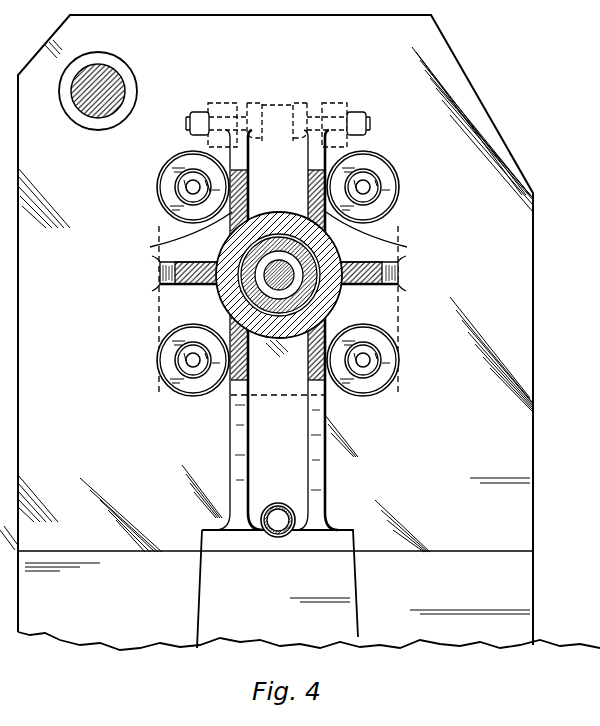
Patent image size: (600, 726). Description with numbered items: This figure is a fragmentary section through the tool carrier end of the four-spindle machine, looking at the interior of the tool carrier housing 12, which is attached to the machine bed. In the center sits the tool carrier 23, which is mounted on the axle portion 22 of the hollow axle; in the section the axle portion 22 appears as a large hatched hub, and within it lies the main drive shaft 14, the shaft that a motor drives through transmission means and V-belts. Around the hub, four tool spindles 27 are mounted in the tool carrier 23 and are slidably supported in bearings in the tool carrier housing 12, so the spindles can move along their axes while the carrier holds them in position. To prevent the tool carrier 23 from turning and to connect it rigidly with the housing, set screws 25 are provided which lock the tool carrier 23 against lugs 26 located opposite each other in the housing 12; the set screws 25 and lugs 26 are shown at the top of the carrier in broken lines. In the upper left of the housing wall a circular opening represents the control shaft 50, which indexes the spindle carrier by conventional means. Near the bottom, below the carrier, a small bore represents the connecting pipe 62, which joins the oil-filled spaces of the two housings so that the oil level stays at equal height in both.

The tool carrier housing 12 is at (500, 452).
The main drive shaft 14 is at (276, 278).
The axle portion 22 is at (306, 258).
The tool carrier 23 is at (232, 212).
The set screws 25 is at (190, 122).
The lugs 26 is at (222, 103).
The tool spindles 27 is at (184, 186).
The control shaft 50 is at (108, 79).
The connecting pipe 62 is at (292, 510).